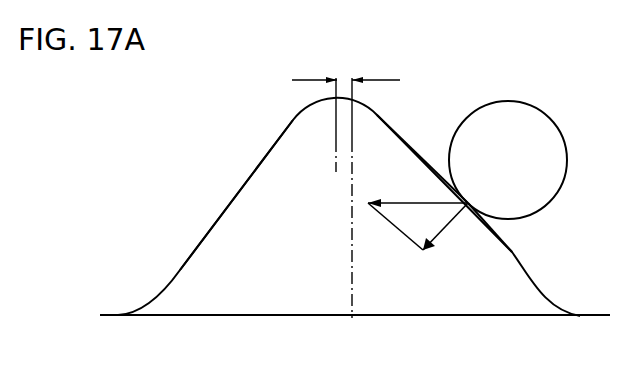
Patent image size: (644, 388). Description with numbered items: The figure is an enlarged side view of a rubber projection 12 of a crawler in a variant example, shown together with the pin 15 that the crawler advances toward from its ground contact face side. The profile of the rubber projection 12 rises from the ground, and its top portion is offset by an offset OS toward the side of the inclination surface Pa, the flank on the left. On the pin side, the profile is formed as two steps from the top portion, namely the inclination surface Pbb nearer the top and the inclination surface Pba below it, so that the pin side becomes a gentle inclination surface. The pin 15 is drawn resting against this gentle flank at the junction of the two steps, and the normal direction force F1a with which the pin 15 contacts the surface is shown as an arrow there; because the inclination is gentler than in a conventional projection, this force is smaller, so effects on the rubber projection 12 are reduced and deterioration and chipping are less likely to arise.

The rubber projection 12 is at (337, 297).
The pin 15 is at (540, 120).
The offset OS is at (348, 75).
The inclination surface Pa is at (222, 217).
The inclination surface Pbb is at (408, 142).
The inclination surface Pba is at (515, 250).
The normal direction force F1a is at (445, 228).